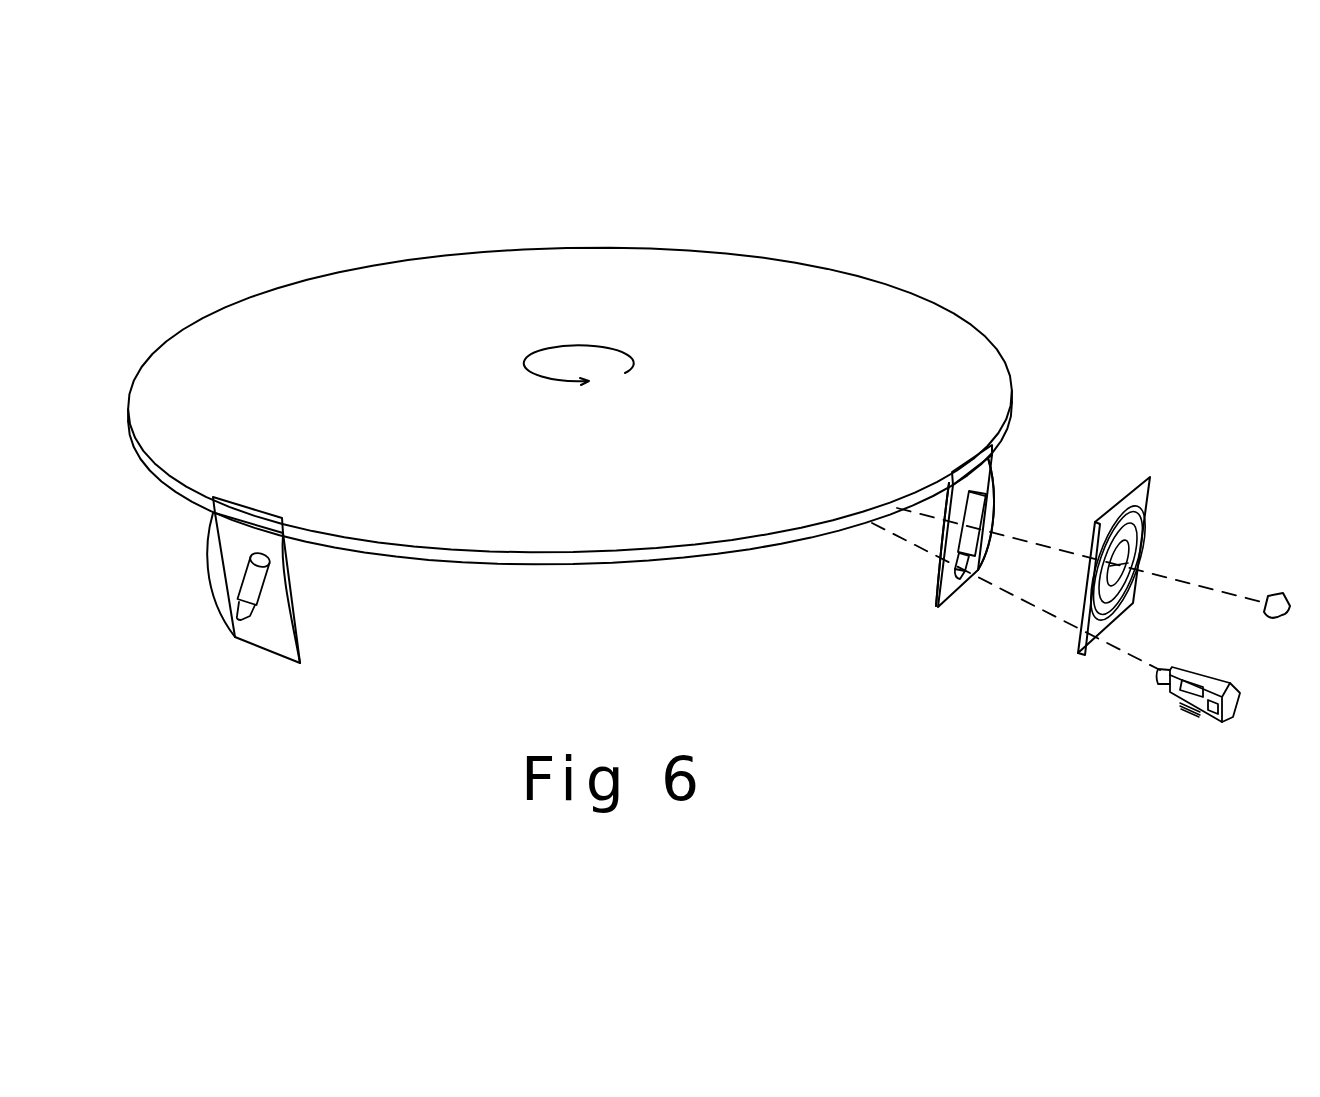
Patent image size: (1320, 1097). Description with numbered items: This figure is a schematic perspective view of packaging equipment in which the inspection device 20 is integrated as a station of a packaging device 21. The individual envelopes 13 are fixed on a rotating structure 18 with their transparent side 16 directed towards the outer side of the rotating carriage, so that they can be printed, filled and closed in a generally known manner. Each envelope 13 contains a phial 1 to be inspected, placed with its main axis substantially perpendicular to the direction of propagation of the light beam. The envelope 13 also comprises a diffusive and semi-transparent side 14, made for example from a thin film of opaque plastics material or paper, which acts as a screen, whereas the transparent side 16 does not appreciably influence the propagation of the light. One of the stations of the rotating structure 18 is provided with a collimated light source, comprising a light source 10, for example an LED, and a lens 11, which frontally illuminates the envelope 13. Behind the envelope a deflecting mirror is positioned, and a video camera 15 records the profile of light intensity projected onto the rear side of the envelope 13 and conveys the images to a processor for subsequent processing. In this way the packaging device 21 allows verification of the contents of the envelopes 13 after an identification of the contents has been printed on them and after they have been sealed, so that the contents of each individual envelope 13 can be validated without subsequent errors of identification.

The phial 1 is at (257, 585).
The light source 10 is at (1275, 600).
The Fresnel lens 11 is at (1145, 490).
The envelope 13 is at (278, 643).
The diffusive and semi-transparent side 14 is at (940, 578).
The video camera 15 is at (1176, 693).
The transparent side 16 is at (992, 515).
The rotating structure 18 is at (443, 277).
The inspection device 20 is at (1120, 383).
The packaging device 21 is at (733, 112).